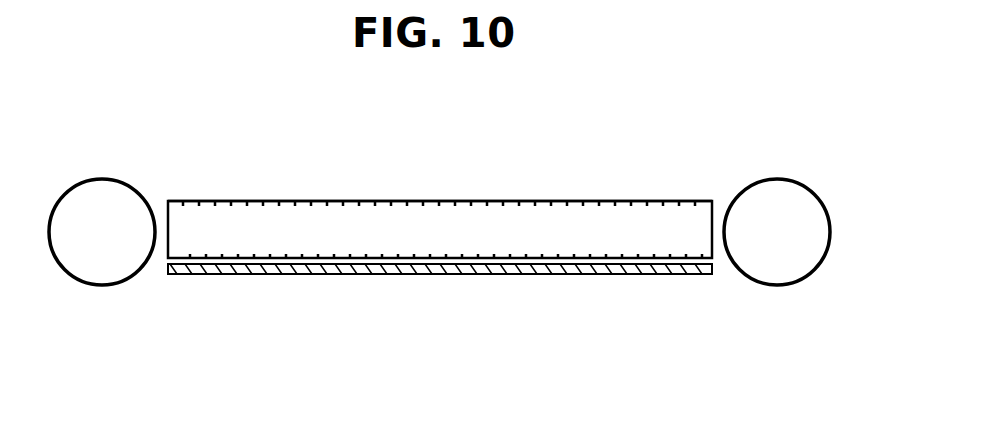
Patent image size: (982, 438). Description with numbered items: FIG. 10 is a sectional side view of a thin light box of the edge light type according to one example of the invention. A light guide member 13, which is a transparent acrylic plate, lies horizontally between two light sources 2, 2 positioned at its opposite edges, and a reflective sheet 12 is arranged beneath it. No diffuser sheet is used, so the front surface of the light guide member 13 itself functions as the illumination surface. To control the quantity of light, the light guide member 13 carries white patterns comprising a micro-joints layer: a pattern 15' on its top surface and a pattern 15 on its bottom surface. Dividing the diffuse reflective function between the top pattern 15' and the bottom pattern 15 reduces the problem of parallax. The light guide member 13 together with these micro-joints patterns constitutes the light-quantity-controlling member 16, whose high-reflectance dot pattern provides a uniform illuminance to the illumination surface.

The light source 2 is at (83, 286).
The reflective sheet 12 is at (447, 275).
The light guide member 13 is at (617, 222).
The white pattern comprising a micro-joints layer 15 is at (446, 290).
The white pattern comprising a micro-joints layer 15' is at (439, 163).
The light-quantity-controlling member 16 is at (470, 202).